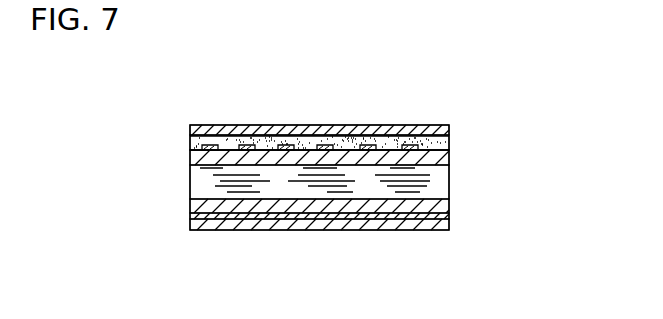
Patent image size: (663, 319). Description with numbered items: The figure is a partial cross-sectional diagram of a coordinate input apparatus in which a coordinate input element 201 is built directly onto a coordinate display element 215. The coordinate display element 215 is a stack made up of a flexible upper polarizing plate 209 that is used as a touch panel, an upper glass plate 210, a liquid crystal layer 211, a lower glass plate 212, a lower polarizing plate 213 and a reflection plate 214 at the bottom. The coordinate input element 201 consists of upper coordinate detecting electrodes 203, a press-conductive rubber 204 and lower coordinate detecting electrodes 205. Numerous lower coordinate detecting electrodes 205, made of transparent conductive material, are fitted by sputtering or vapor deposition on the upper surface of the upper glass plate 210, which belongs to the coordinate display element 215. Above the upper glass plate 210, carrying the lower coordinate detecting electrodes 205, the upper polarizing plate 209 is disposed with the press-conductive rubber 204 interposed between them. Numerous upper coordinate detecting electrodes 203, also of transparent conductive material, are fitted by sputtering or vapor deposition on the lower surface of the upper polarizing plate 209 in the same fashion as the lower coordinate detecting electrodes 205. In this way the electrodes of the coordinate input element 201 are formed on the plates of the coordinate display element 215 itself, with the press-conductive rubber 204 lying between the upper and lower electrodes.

The coordinate input element 201 is at (102, 60).
The upper coordinate detecting electrodes 203 is at (190, 137).
The press-conductive rubber 204 is at (190, 145).
The lower coordinate detecting electrodes 205 is at (323, 140).
The flexible upper polarizing plate 209 is at (396, 126).
The upper glass plate 210 is at (451, 156).
The liquid crystal layer 211 is at (449, 180).
The lower glass plate 212 is at (451, 205).
The lower polarizing plate 213 is at (451, 218).
The reflection plate 214 is at (397, 231).
The coordinate display element 215 is at (542, 95).